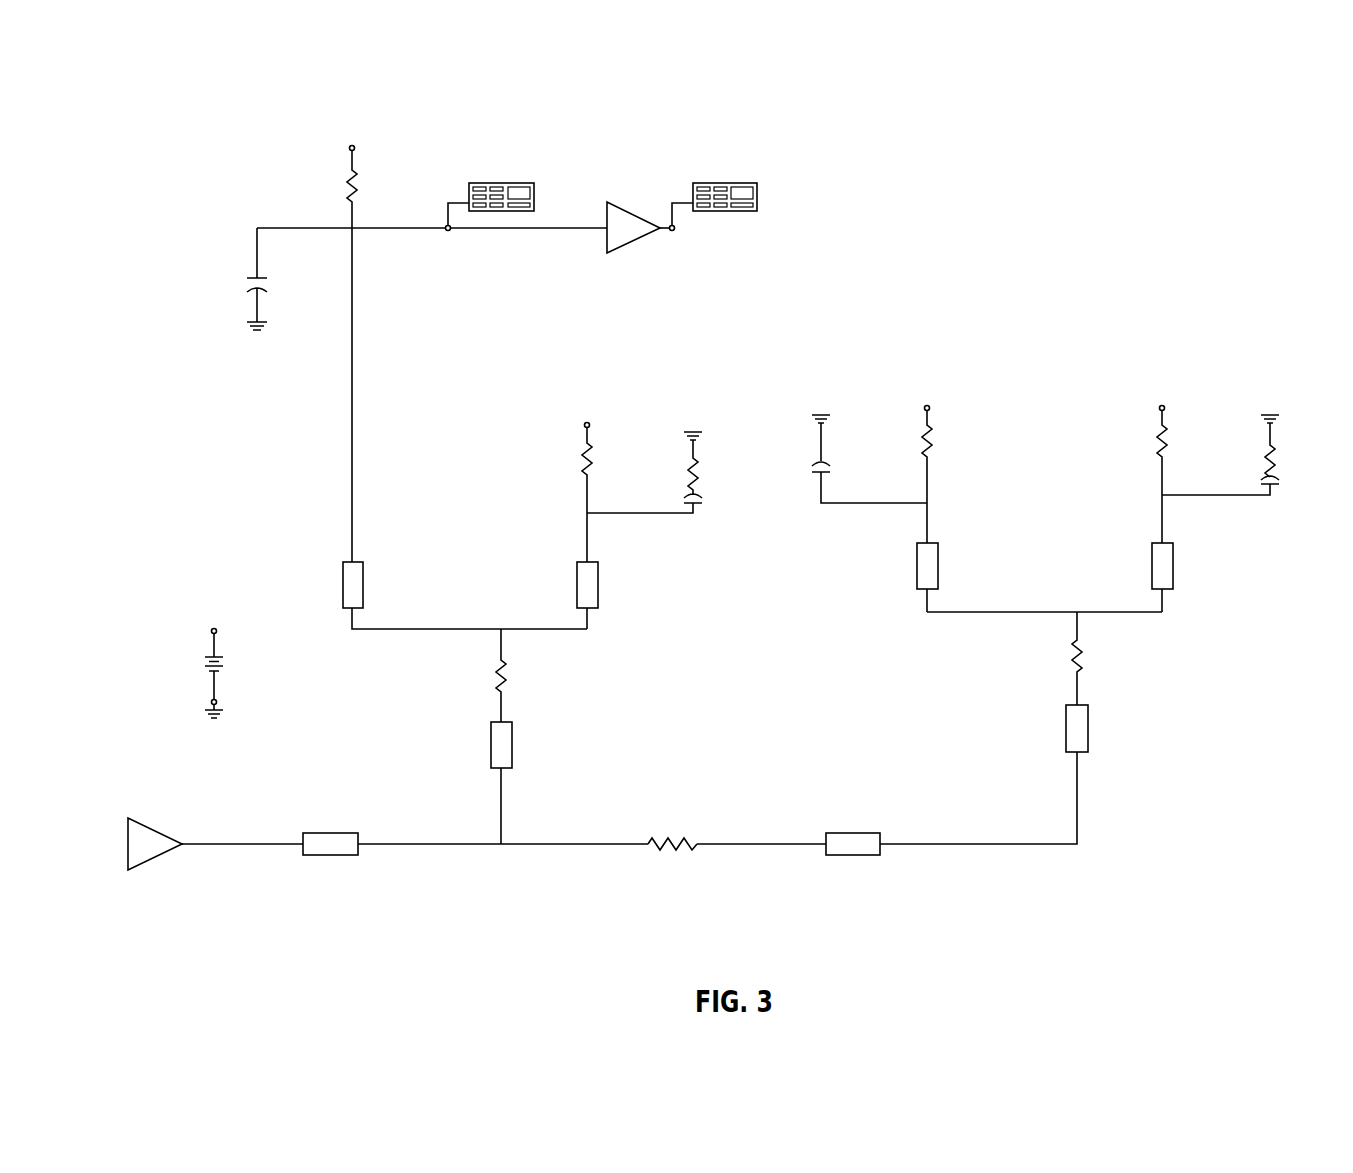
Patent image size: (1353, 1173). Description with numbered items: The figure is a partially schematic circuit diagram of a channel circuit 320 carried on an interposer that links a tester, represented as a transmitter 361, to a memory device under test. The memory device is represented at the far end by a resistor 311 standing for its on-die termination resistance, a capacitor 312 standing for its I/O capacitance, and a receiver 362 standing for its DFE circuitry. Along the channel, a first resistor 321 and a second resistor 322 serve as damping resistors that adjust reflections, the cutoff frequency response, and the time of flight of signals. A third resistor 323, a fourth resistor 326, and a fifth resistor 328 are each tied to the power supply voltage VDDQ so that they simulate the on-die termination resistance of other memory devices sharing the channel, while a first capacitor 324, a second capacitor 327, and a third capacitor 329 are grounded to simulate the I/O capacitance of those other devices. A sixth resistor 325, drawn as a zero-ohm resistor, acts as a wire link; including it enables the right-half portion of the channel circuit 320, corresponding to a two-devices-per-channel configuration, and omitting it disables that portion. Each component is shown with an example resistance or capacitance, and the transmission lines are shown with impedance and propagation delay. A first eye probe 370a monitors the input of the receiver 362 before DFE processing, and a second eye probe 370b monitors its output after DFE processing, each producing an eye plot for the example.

The resistor 311 is at (330, 186).
The capacitor 312 is at (232, 282).
The channel circuit 320 is at (1245, 228).
The first resistor 321 is at (485, 673).
The second resistor 322 is at (1063, 652).
The third resistor 323 is at (905, 437).
The first capacitor 324 is at (805, 477).
The sixth resistor 325 is at (675, 833).
The fourth resistor 326 is at (572, 460).
The second capacitor 327 is at (678, 455).
The fifth resistor 328 is at (1148, 442).
The third capacitor 329 is at (1250, 447).
The transmitter 361 is at (173, 823).
The receiver 362 is at (644, 200).
The first eye probe 370a is at (500, 163).
The second eye probe 370b is at (725, 162).